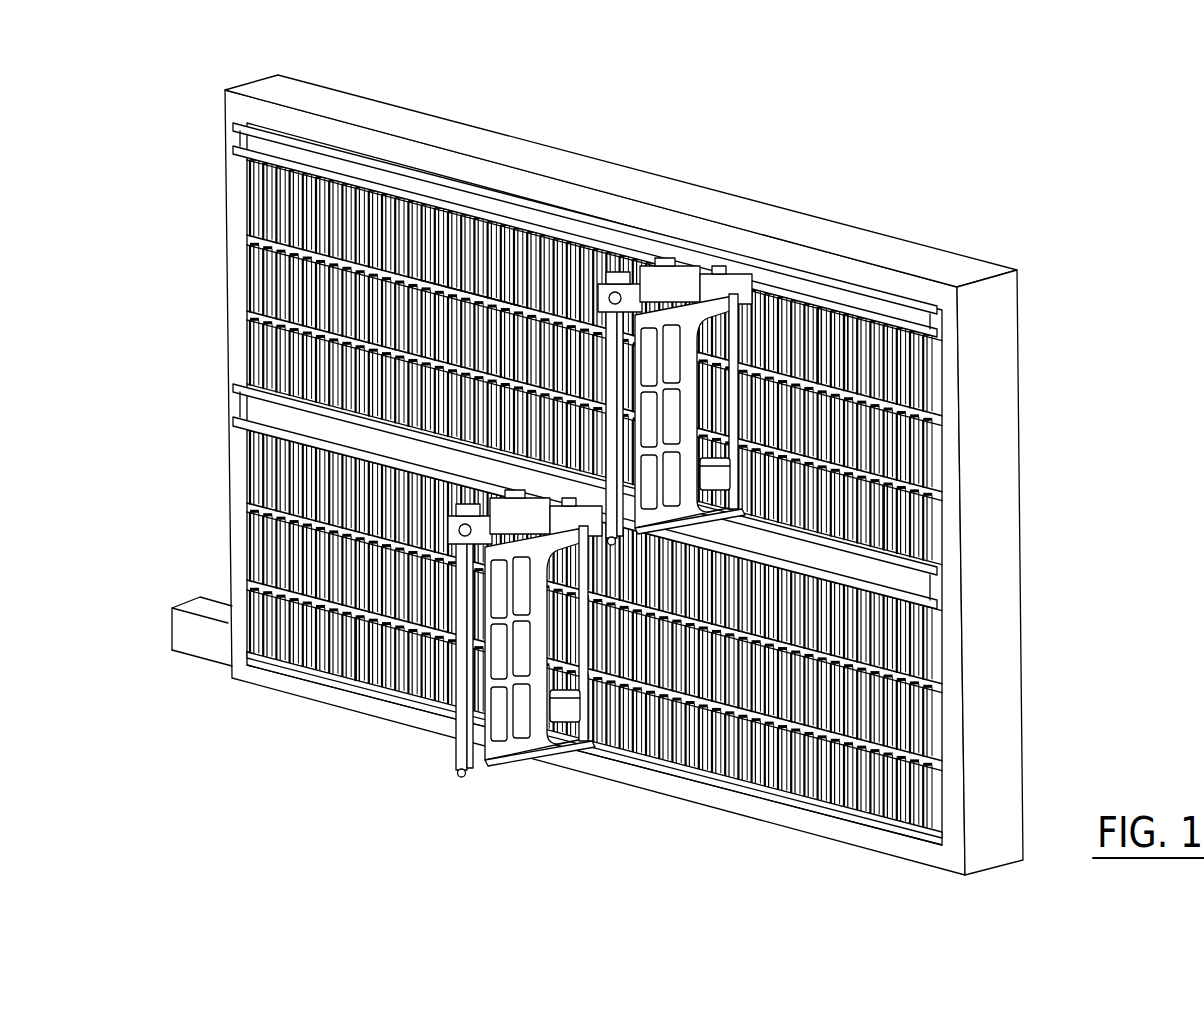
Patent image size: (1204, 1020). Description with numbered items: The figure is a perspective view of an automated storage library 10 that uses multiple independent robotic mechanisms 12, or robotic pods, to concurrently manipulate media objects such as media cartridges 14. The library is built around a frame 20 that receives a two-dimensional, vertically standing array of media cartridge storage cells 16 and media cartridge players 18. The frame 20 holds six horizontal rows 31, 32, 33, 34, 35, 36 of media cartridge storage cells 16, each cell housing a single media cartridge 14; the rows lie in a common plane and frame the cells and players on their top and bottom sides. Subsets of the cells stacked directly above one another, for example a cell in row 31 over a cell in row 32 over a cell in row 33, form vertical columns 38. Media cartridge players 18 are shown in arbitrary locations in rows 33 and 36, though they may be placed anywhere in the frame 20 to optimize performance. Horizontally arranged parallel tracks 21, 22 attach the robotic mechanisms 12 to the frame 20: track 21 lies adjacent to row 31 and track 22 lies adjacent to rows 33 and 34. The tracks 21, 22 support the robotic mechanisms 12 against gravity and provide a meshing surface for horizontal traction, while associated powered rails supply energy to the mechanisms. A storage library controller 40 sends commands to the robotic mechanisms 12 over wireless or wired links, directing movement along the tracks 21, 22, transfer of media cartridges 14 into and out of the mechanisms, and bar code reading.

The automated storage library 10 is at (1100, 148).
The robotic mechanism 12 is at (688, 305).
The media cartridge 14 is at (818, 322).
The media cartridge storage cell 16 is at (850, 322).
The media cartridge player 18 is at (883, 523).
The frame 20 is at (578, 150).
The track 21 is at (245, 140).
The track 22 is at (233, 388).
The horizontal row 31 is at (230, 199).
The horizontal row 32 is at (228, 262).
The horizontal row 33 is at (228, 329).
The horizontal row 34 is at (228, 456).
The horizontal row 35 is at (228, 531).
The horizontal row 36 is at (228, 598).
The vertical column 38 is at (453, 198).
The storage library controller 40 is at (170, 632).